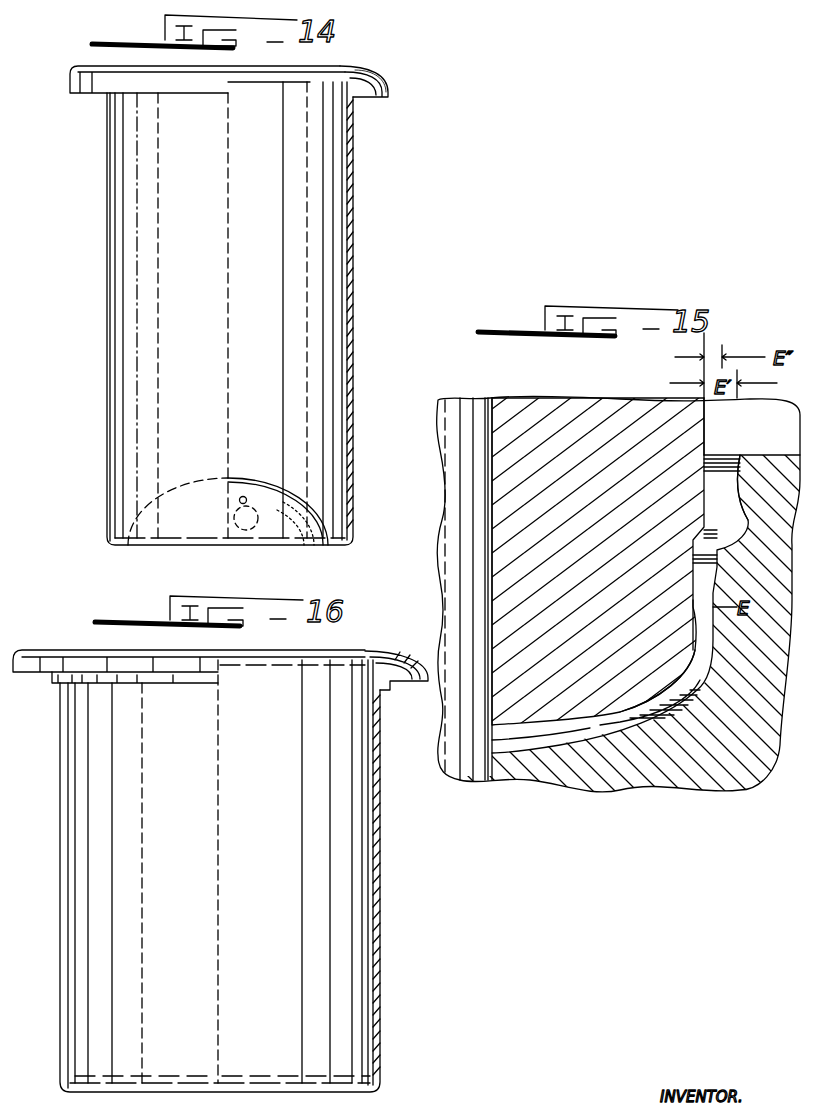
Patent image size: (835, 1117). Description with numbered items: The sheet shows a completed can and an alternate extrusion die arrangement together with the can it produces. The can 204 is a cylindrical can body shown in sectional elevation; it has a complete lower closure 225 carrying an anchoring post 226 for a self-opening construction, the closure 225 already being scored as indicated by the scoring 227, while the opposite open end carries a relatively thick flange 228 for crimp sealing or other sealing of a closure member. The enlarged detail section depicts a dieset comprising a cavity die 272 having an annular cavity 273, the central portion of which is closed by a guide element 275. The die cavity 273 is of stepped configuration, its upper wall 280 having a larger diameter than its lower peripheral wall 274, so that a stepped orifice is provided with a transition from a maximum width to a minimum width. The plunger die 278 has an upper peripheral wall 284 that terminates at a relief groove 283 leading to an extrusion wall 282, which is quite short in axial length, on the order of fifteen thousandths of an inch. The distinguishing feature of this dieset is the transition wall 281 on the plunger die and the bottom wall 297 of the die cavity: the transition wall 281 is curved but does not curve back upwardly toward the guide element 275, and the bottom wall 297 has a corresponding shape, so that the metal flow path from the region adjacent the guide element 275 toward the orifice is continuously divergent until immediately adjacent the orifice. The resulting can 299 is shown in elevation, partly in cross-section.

In FIG. 14, the can 204 is at (353, 243).
In FIG. 14, the flange 228 is at (383, 87).
In FIG. 14, the lower closure 225 is at (278, 528).
In FIG. 14, the anchoring post 226 is at (245, 496).
In FIG. 14, the scoring 227 is at (243, 531).
In FIG. 16, the can 299 is at (340, 877).
In FIG. 15, the cavity die 272 is at (753, 737).
In FIG. 15, the guide element 275 is at (443, 562).
In FIG. 15, the plunger die 278 is at (573, 407).
In FIG. 15, the upper peripheral wall 284 is at (704, 423).
In FIG. 15, the annular cavity 273 is at (713, 483).
In FIG. 15, the upper wall 280 is at (740, 498).
In FIG. 15, the relief groove 283 is at (697, 583).
In FIG. 15, the extrusion wall 282 is at (697, 640).
In FIG. 15, the lower peripheral wall 274 is at (703, 657).
In FIG. 15, the transition wall 281 is at (640, 708).
In FIG. 15, the bottom wall 297 is at (530, 752).